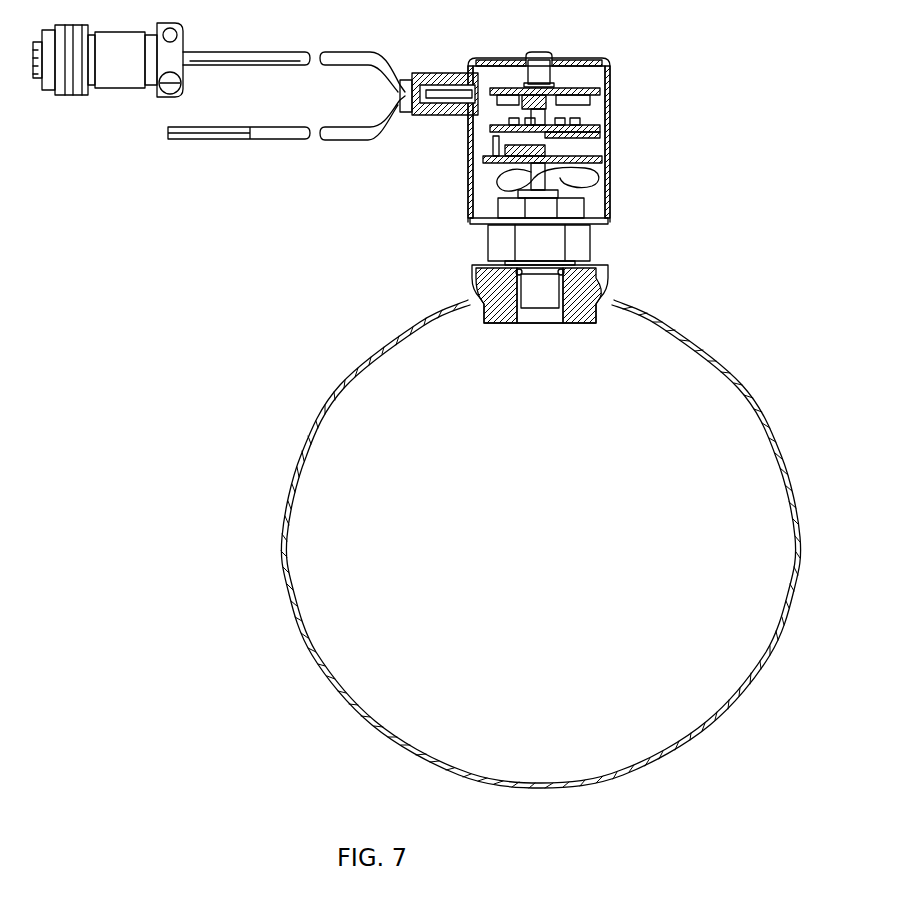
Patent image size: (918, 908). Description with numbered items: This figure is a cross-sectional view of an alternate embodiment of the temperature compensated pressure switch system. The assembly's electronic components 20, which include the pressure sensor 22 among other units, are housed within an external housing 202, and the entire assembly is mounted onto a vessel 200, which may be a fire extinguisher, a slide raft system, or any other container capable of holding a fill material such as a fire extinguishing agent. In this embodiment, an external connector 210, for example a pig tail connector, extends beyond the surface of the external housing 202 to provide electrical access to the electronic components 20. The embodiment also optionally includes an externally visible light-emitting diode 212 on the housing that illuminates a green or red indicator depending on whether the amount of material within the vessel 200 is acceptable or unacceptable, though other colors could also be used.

The vessel 200 is at (662, 318).
The pressure sensor 22 is at (543, 312).
The electronic components 20 is at (599, 140).
The external housing 202 is at (608, 183).
The light-emitting diode 212 is at (548, 53).
The external connector 210 is at (112, 90).